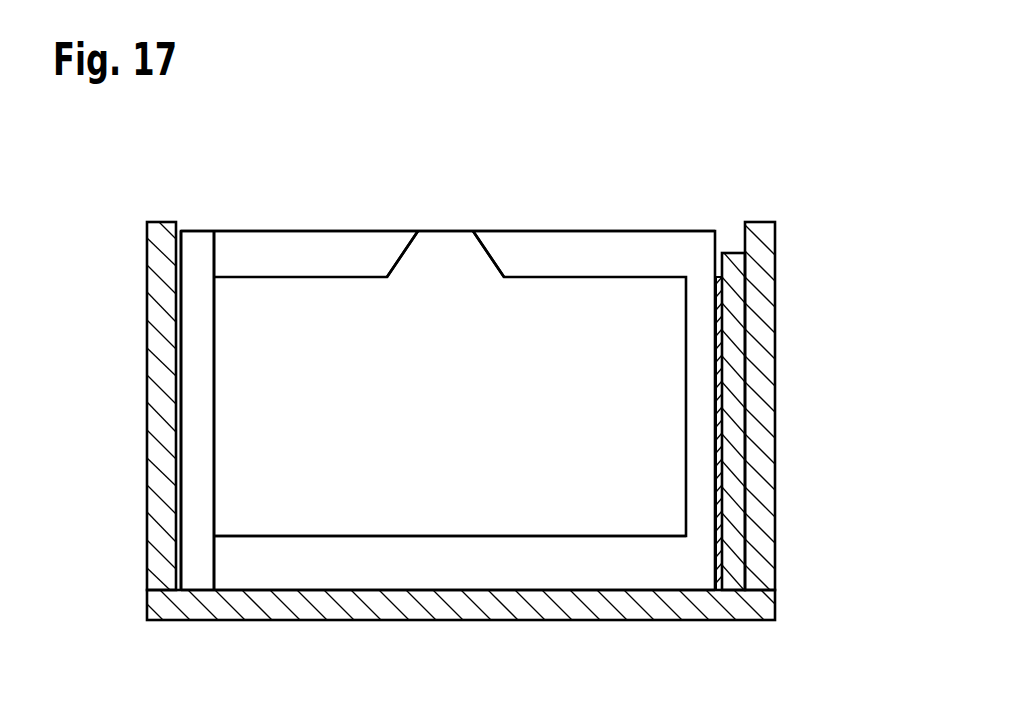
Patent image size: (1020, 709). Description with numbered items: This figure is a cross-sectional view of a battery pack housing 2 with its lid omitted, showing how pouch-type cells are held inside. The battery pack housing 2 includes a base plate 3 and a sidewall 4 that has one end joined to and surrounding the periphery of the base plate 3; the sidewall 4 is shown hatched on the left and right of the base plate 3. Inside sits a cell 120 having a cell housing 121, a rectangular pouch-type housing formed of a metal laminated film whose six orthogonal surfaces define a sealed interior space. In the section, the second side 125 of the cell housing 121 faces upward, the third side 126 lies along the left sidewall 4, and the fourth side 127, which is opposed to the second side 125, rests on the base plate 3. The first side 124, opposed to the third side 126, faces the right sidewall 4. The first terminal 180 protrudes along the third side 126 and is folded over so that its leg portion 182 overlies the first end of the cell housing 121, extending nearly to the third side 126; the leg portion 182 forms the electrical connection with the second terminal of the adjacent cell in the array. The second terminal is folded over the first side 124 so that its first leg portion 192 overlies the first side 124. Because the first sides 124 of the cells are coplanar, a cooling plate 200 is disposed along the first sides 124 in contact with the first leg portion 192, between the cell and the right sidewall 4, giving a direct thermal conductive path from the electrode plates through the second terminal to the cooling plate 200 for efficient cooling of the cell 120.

The battery pack housing 2 is at (742, 180).
The base plate 3 is at (605, 608).
The sidewall 4 is at (160, 244).
The cell 120 is at (288, 237).
The cell housing 121 is at (395, 233).
The second side 125 is at (540, 233).
The third side 126 is at (178, 563).
The fourth side 127 is at (493, 597).
The first terminal 180 is at (450, 406).
The leg portion 182 is at (500, 432).
The first leg portion 192 is at (720, 497).
The cooling plate 200 is at (733, 403).
The first side 124 is at (725, 563).